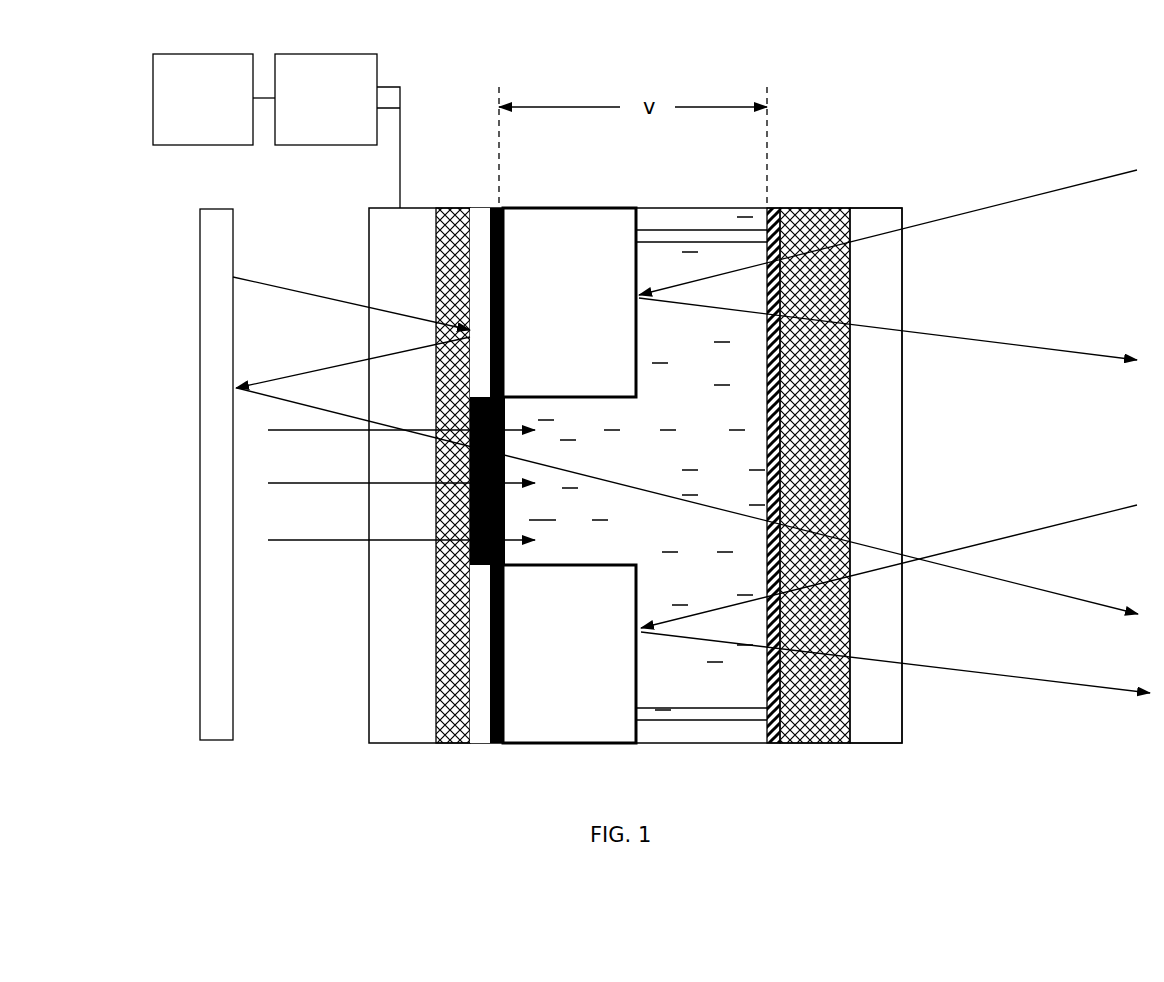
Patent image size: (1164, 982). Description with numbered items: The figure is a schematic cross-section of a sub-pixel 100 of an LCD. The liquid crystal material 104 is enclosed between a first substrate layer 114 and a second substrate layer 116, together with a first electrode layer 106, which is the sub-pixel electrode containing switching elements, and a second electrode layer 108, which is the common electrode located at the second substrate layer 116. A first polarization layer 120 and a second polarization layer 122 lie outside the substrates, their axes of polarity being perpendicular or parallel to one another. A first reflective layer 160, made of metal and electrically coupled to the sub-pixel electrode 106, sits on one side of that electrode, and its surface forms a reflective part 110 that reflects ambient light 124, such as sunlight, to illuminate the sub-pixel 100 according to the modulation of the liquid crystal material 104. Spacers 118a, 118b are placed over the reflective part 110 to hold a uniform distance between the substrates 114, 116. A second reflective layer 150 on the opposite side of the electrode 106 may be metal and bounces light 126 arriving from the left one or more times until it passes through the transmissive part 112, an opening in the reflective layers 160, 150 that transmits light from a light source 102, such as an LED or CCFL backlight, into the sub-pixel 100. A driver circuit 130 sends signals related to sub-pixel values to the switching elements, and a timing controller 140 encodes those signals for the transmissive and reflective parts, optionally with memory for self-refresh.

The sub-pixel 100 is at (1030, 150).
The light source 102 is at (222, 747).
The liquid crystal material 104 is at (711, 463).
The first electrode layer 106 is at (503, 745).
The second electrode layer 108 is at (780, 744).
The reflective part 110 is at (639, 293).
The transmissive part 112 is at (436, 478).
The first substrate layer 114 is at (448, 208).
The second substrate layer 116 is at (797, 207).
The spacer 118a is at (697, 231).
The spacer 118b is at (710, 721).
The first polarization layer 120 is at (368, 243).
The second polarization layer 122 is at (872, 207).
The ambient light 124 is at (1010, 203).
The light 126 is at (972, 571).
The driver circuit 130 is at (400, 108).
The timing controller 140 is at (153, 123).
The second reflective layer 150 is at (496, 242).
The first reflective layer 160 is at (587, 318).